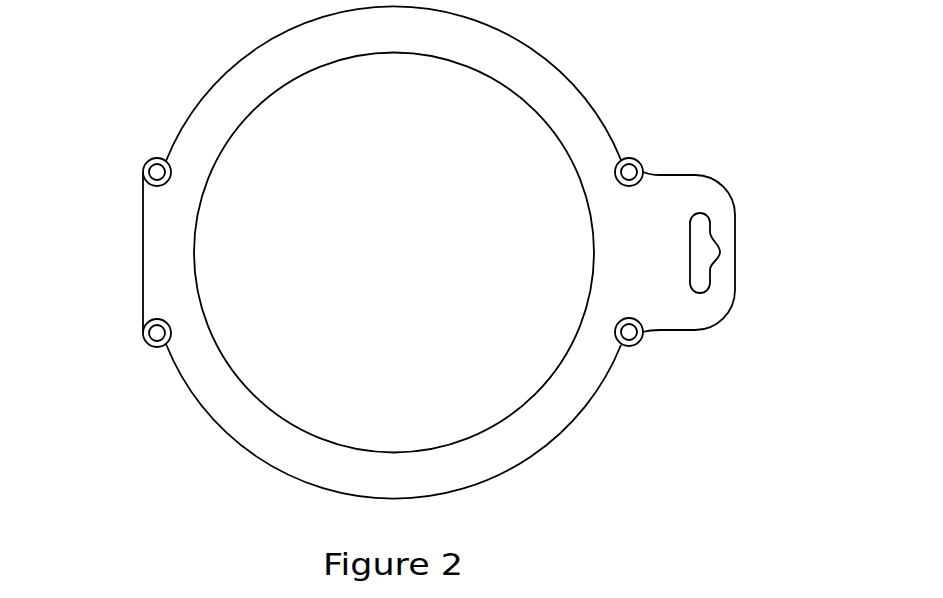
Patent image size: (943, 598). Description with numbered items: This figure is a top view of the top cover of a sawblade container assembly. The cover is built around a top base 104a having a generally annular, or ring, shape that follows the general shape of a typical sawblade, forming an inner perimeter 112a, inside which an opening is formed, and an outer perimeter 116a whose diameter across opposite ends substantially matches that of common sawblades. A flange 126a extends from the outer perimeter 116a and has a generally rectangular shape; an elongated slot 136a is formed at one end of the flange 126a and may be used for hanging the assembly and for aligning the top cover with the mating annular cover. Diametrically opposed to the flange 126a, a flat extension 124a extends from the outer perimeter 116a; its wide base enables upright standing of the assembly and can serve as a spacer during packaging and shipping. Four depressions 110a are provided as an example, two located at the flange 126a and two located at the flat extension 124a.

The top base 104a is at (393, 250).
The depression 110a is at (158, 165).
The inner perimeter 112a is at (510, 88).
The outer perimeter 116a is at (528, 50).
The flat extension 124a is at (140, 257).
The flange 126a is at (722, 192).
The elongated slot 136a is at (705, 273).